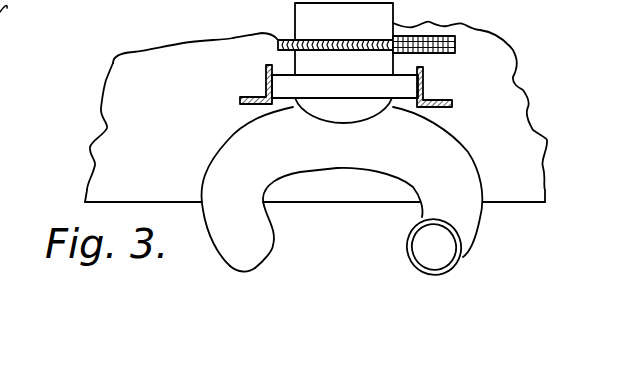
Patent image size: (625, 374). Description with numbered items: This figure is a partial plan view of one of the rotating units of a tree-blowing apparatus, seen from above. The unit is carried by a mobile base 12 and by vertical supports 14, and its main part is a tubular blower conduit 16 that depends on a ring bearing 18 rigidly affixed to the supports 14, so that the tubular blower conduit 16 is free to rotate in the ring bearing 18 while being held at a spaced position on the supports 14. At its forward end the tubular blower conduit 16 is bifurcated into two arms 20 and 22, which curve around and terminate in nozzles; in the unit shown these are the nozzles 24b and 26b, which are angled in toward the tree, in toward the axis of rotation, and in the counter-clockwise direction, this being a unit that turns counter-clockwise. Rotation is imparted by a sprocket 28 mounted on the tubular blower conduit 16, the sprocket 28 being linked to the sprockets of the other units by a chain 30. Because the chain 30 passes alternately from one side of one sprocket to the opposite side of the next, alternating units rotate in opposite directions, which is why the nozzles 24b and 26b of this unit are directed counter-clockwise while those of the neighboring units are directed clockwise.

The mobile base 12 is at (113, 135).
The vertical supports 14 is at (250, 98).
The tubular blower conduit 16 is at (399, 13).
The ring bearing 18 is at (336, 87).
The arm 20 is at (463, 170).
The arm 22 is at (222, 157).
The nozzle 24b is at (420, 267).
The nozzle 26b is at (262, 263).
The sprocket 28 is at (313, 42).
The chain 30 is at (450, 38).